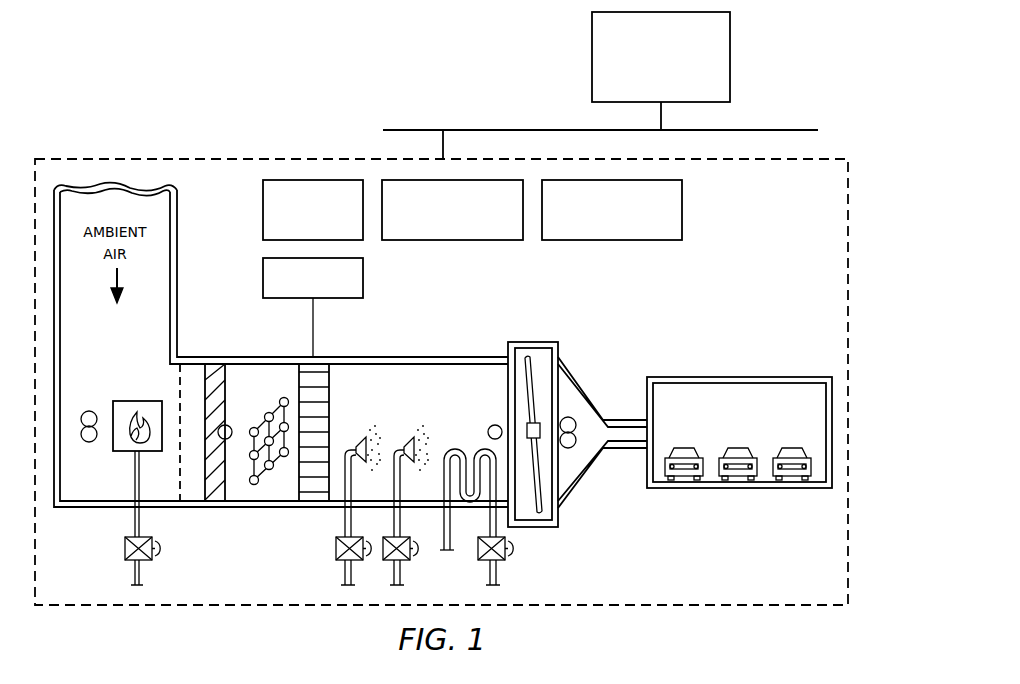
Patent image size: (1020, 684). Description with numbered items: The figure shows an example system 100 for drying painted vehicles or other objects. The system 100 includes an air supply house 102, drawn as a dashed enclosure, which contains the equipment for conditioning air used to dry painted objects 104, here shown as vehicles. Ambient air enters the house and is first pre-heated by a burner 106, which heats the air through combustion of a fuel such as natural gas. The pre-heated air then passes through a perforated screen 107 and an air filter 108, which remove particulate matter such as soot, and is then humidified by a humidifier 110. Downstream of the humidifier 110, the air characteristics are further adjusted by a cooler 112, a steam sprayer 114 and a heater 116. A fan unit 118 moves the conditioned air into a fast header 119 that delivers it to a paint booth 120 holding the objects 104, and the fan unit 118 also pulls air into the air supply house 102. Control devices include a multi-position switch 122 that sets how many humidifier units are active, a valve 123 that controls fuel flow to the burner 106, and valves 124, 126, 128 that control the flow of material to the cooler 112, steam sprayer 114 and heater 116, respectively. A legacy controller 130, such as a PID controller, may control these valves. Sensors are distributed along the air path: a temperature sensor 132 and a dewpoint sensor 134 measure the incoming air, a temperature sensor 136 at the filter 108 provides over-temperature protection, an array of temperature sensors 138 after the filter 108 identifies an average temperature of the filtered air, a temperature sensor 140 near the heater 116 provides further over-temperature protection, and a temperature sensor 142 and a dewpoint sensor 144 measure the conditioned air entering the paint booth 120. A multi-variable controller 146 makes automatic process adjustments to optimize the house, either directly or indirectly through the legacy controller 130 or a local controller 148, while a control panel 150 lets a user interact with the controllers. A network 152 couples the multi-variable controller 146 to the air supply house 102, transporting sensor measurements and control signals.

The system 100 is at (268, 73).
The air supply house 102 is at (793, 201).
The painted objects 104 is at (793, 400).
The burner 106 is at (137, 400).
The perforated screen 107 is at (191, 376).
The air filter 108 is at (230, 507).
The humidifier 110 is at (298, 378).
The cooler 112 is at (357, 440).
The steam sprayer 114 is at (405, 440).
The heater 116 is at (445, 448).
The fan unit 118 is at (530, 342).
The fast header 119 is at (630, 418).
The paint booth 120 is at (738, 489).
The multi-position switch 122 is at (263, 284).
The valve 123 is at (122, 553).
The valve 124 is at (333, 553).
The valve 126 is at (418, 556).
The valve 128 is at (511, 556).
The legacy controller 130 is at (682, 209).
The temperature sensor 132 is at (88, 410).
The dewpoint sensor 134 is at (88, 443).
The temperature sensor 136 is at (232, 427).
The array of temperature sensors 138 is at (270, 483).
The temperature sensor 140 is at (494, 425).
The temperature sensor 142 is at (569, 416).
The dewpoint sensor 144 is at (568, 449).
The multi-variable controller 146 is at (730, 57).
The local controller 148 is at (452, 240).
The control panel 150 is at (263, 208).
The network 152 is at (412, 128).